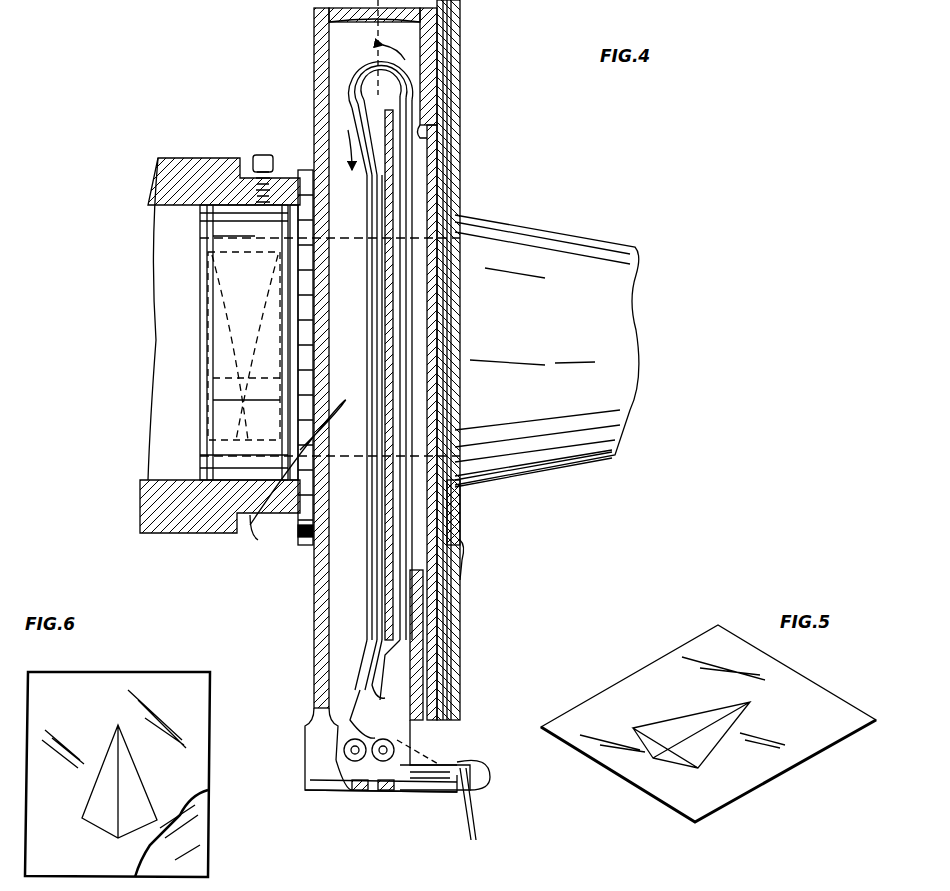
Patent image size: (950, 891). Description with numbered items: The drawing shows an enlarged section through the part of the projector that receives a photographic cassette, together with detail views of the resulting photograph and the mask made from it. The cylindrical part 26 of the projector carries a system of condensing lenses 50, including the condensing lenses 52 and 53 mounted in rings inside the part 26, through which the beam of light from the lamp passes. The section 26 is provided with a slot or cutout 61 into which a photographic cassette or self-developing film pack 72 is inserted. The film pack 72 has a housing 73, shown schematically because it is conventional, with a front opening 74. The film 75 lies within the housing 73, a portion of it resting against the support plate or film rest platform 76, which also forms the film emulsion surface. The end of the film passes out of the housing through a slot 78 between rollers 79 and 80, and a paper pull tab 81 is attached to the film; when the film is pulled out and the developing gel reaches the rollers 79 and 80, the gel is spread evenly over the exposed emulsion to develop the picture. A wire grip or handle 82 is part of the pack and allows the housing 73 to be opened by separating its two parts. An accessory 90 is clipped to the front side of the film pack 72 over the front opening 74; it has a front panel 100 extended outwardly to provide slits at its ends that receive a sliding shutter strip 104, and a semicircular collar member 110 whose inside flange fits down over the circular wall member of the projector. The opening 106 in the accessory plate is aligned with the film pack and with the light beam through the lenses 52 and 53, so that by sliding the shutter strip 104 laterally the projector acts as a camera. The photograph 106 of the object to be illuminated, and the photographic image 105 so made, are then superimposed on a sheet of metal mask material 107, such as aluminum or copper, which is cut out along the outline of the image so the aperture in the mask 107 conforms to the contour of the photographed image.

In FIG. 4, the cylindrical part of the projector 26 is at (186, 158).
In FIG. 4, the system of condensing lenses 50 is at (190, 326).
In FIG. 4, the condensing lens 52 is at (210, 372).
In FIG. 4, the condensing lens 53 is at (215, 407).
In FIG. 4, the slot or cutout 61 is at (262, 525).
In FIG. 4, the photographic cassette or self-developing film pack 72 is at (312, 108).
In FIG. 4, the housing of the self-developing film pack 73 is at (314, 86).
In FIG. 4, the front opening 74 is at (420, 148).
In FIG. 4, the film 75 is at (400, 192).
In FIG. 4, the support plate or film rest platform 76 is at (392, 262).
In FIG. 4, the slot 78 is at (372, 792).
In FIG. 4, the roller 79 is at (348, 760).
In FIG. 4, the roller 80 is at (378, 762).
In FIG. 4, the paper pull tab 81 is at (465, 830).
In FIG. 4, the wire grip or handle 82 is at (438, 765).
In FIG. 4, the accessory 90 is at (470, 62).
In FIG. 4, the front panel 100 is at (447, 82).
In FIG. 4, the sliding shutter strip 104 is at (460, 233).
In FIG. 6, the photographic image 105 is at (190, 697).
In FIG. 5, the photographic image 105 is at (738, 795).
In FIG. 4, the opening in the plate / photograph 106 is at (495, 468).
In FIG. 6, the metal mask material 107 is at (208, 845).
In FIG. 4, the collar member 110 is at (462, 503).